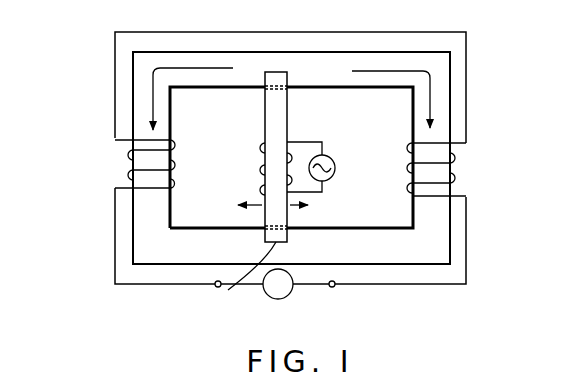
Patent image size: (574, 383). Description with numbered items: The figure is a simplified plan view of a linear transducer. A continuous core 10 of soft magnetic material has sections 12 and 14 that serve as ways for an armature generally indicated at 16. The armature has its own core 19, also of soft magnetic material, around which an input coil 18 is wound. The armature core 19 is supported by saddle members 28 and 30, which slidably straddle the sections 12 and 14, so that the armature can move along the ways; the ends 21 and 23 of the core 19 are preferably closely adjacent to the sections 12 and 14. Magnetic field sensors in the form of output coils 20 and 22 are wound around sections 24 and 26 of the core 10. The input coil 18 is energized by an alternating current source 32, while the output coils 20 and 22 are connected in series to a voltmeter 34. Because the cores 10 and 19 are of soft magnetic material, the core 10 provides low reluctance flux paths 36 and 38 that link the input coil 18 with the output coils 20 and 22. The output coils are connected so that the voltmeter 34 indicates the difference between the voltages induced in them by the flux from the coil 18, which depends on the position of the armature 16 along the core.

The continuous core 10 is at (390, 50).
The section of core 12 is at (300, 62).
The section of core 14 is at (350, 247).
The armature 16 is at (253, 141).
The input coil 18 is at (290, 142).
The armature core 19 is at (272, 109).
The output coil 20 is at (176, 148).
The end of armature core 21 is at (285, 97).
The output coil 22 is at (408, 151).
The end of armature core 23 is at (292, 219).
The section of core 24 is at (143, 220).
The section of core 26 is at (433, 215).
The saddle member 28 is at (270, 72).
The saddle member 30 is at (228, 290).
The alternating current source 32 is at (333, 160).
The voltmeter 34 is at (284, 295).
The flux path 36 is at (145, 92).
The flux path 38 is at (432, 97).